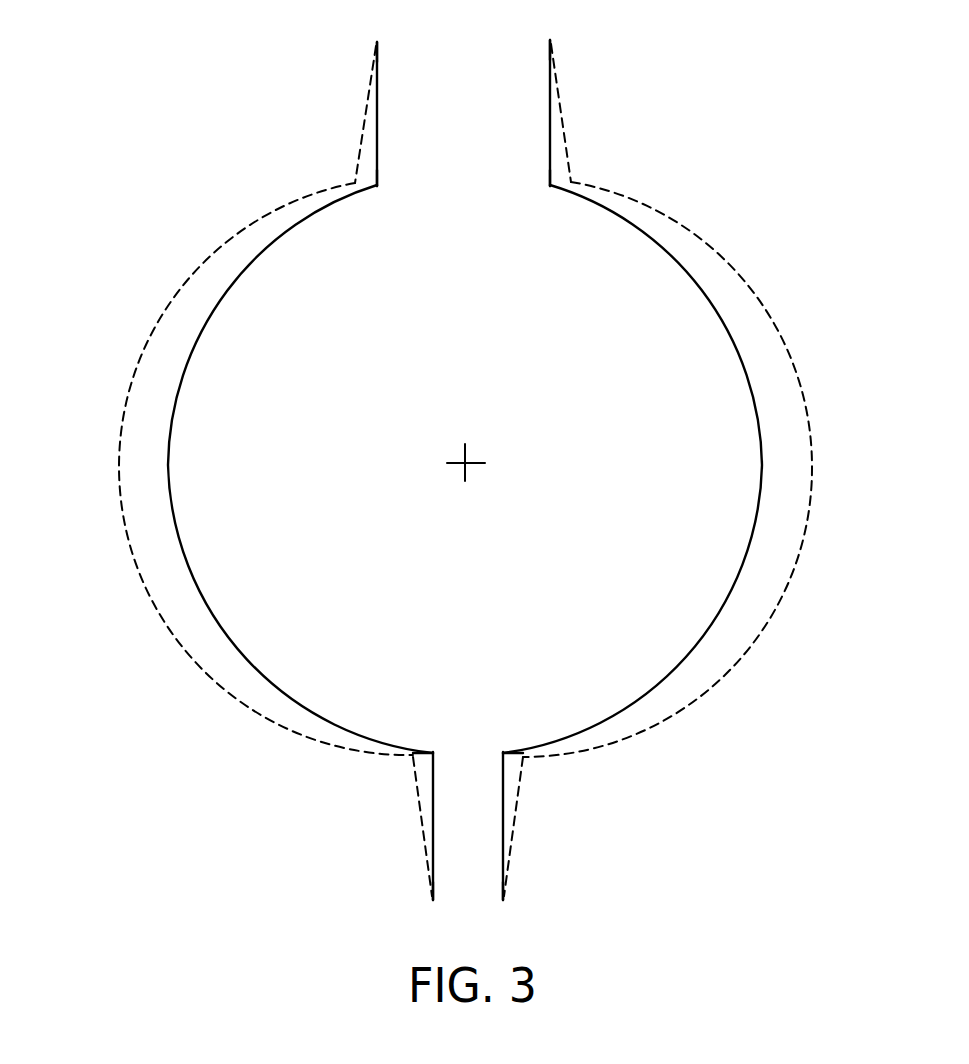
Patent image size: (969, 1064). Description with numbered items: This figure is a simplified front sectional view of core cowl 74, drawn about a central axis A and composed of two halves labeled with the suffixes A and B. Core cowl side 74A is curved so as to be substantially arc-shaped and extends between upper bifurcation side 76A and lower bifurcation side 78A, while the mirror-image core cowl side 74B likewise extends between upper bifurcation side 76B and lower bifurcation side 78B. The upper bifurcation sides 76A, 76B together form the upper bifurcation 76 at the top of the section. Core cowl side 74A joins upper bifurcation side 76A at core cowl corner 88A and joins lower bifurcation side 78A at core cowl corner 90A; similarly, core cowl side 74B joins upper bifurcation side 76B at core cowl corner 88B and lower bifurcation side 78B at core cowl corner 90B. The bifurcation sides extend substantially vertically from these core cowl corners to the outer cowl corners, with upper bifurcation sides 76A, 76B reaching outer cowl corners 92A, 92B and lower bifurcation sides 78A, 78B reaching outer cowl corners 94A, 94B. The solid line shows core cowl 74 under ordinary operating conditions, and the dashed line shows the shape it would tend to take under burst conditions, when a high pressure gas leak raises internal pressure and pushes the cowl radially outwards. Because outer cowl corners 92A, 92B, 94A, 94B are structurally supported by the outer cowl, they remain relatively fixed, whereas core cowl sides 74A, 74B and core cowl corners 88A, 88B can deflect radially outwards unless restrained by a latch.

The core cowl 74 is at (433, 469).
The core cowl side 74A is at (168, 452).
The core cowl side 74B is at (763, 437).
The upper tab / clamp portion 76 is at (442, 108).
The upper bifurcation side 76A is at (379, 163).
The upper bifurcation side 76B is at (548, 160).
The lower bifurcation side 78A is at (434, 777).
The lower bifurcation side 78B is at (502, 777).
The core cowl corner 88A is at (377, 183).
The core cowl corner 88B is at (553, 183).
The core cowl corner 90A is at (412, 759).
The core cowl corner 90B is at (523, 759).
The outer cowl corner 92A is at (377, 42).
The outer cowl corner 92B is at (551, 42).
The outer cowl corner 94A is at (432, 899).
The outer cowl corner 94B is at (504, 899).
The central axis A is at (466, 468).